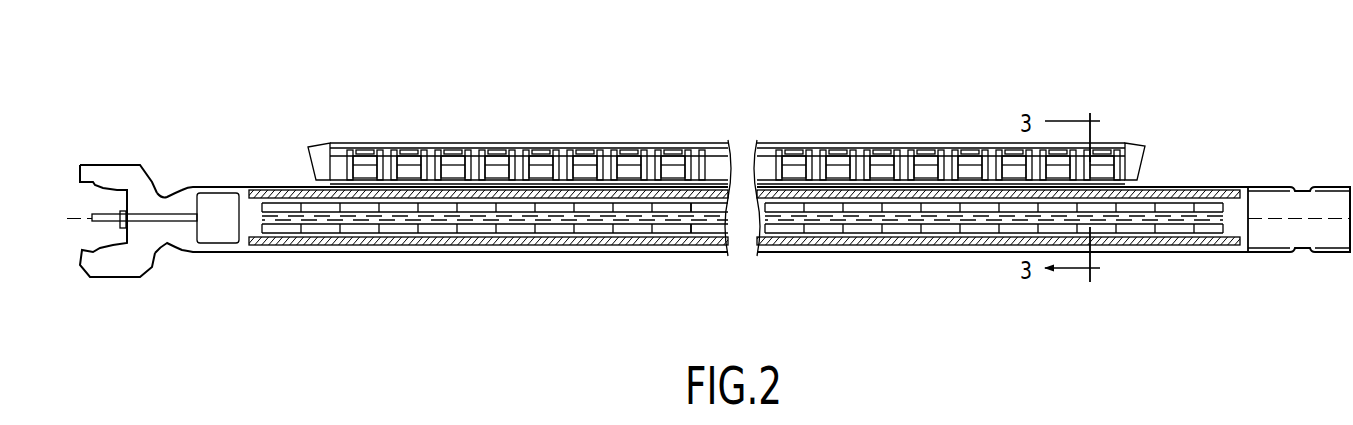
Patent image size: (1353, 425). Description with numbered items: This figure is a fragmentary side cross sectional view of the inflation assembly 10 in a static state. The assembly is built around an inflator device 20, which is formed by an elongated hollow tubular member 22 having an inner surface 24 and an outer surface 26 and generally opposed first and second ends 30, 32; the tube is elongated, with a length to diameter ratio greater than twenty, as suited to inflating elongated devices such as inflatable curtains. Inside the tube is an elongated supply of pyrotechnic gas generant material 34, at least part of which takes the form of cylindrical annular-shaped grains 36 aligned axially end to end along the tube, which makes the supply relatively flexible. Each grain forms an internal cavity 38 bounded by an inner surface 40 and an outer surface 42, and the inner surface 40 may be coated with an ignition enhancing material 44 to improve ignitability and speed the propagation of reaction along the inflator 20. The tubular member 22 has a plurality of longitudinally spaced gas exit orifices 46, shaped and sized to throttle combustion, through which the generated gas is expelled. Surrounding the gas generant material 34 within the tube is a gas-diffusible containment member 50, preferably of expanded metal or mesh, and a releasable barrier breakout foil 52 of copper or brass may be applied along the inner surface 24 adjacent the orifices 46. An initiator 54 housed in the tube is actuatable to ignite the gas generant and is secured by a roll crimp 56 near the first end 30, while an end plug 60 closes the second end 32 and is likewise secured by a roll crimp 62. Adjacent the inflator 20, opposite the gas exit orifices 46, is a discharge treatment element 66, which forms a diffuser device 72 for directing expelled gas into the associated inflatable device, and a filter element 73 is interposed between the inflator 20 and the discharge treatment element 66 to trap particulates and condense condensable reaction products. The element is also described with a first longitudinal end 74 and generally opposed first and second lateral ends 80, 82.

The inflation assembly 10 is at (1212, 91).
The inflator device 20 is at (299, 260).
The elongated hollow tubular member 22 is at (1008, 253).
The inner surface 24 is at (1258, 254).
The outer surface 26 is at (1237, 256).
The first end 30 is at (133, 294).
The second end 32 is at (1340, 260).
The supply of pyrotechnic gas generant material 34 is at (480, 208).
The cylindrical annular-shaped grains 36 is at (700, 228).
The internal cavity 38 is at (697, 210).
The inner surface 40 is at (863, 218).
The outer surface 42 is at (827, 248).
The ignition enhancing material 44 is at (913, 220).
The gas exit orifices 46 is at (597, 188).
The containment member 50 is at (253, 181).
The releasable barrier breakout foil 52 is at (285, 188).
The initiator 54 is at (223, 238).
The roll crimp 56 is at (182, 182).
The end plug 60 is at (1270, 202).
The roll crimp 62 is at (1303, 193).
The discharge treatment element 66 is at (658, 134).
The diffuser device 72 is at (338, 143).
The filter element 73 is at (800, 143).
The first longitudinal end 74 is at (423, 189).
The first lateral end 80 is at (318, 142).
The second lateral end 82 is at (1139, 136).